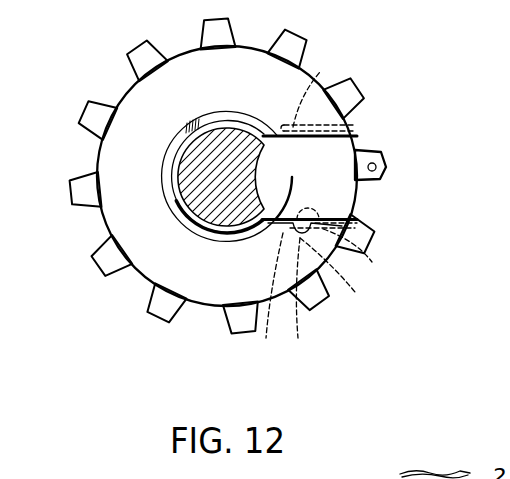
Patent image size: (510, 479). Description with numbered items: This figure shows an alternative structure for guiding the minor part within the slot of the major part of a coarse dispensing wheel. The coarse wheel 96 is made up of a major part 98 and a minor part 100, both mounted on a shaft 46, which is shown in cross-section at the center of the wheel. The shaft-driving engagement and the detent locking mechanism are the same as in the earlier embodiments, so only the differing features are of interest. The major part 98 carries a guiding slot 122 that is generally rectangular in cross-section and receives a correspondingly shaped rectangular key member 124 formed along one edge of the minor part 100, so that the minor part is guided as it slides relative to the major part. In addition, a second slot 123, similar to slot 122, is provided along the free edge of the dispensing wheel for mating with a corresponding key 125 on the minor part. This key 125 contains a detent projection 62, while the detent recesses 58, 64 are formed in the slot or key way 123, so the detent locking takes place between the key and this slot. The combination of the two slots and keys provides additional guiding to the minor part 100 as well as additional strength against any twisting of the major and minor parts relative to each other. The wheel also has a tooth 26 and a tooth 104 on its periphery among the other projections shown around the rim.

The tooth 26 is at (317, 300).
The shaft 46 is at (208, 213).
The detent recess 58 is at (299, 301).
The detent projection 62 is at (362, 257).
The detent recess 64 is at (342, 276).
The coarse wheel 96 is at (128, 71).
The major part 98 is at (136, 117).
The minor part 100 is at (343, 190).
The tooth 104 is at (143, 255).
The guiding slot 122 is at (320, 72).
The slot 123 is at (262, 299).
The rectangular key member 124 is at (348, 128).
The key 125 is at (372, 222).